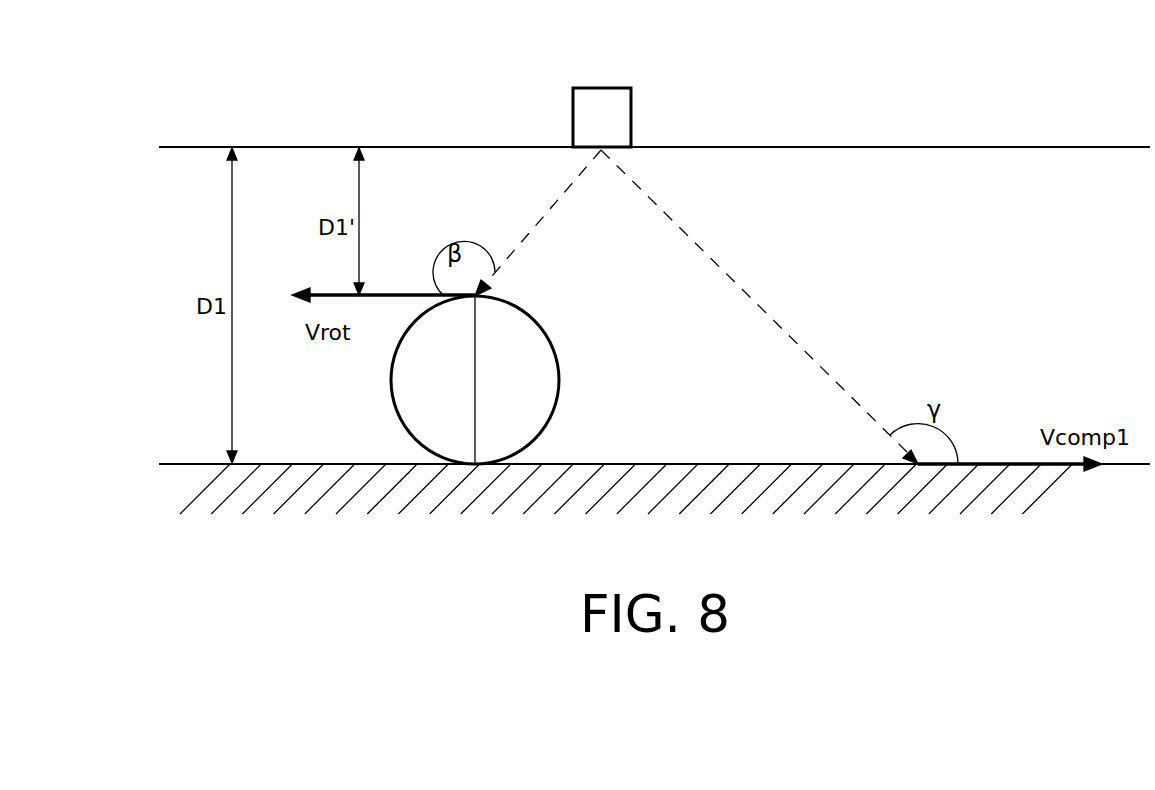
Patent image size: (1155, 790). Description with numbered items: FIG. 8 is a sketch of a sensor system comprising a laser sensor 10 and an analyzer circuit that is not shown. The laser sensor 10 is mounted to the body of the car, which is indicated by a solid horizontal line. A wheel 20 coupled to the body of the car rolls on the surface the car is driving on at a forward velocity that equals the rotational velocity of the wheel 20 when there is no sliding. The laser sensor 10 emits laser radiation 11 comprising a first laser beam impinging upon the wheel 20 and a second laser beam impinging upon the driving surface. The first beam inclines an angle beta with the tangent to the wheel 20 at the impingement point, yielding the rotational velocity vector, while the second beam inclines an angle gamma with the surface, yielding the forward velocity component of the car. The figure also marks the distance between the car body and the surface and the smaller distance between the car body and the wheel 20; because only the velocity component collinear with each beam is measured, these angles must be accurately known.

The laser sensor 10 is at (599, 88).
The laser radiation 11 is at (545, 213).
The wheel 20 is at (560, 380).